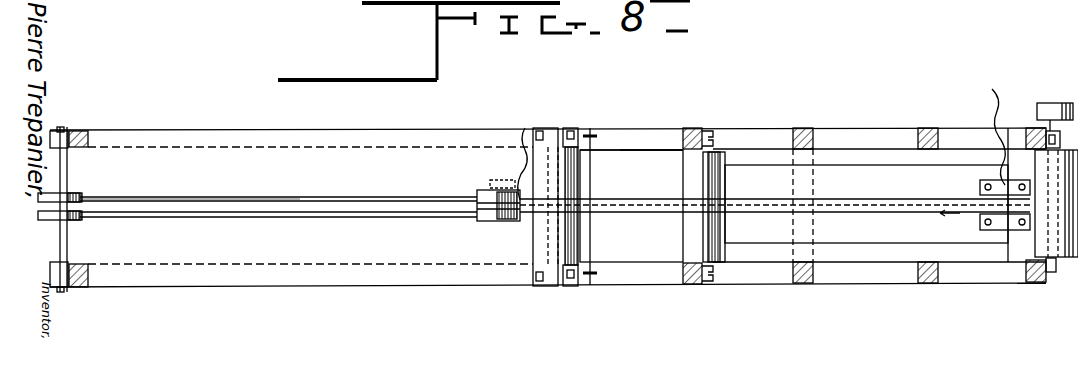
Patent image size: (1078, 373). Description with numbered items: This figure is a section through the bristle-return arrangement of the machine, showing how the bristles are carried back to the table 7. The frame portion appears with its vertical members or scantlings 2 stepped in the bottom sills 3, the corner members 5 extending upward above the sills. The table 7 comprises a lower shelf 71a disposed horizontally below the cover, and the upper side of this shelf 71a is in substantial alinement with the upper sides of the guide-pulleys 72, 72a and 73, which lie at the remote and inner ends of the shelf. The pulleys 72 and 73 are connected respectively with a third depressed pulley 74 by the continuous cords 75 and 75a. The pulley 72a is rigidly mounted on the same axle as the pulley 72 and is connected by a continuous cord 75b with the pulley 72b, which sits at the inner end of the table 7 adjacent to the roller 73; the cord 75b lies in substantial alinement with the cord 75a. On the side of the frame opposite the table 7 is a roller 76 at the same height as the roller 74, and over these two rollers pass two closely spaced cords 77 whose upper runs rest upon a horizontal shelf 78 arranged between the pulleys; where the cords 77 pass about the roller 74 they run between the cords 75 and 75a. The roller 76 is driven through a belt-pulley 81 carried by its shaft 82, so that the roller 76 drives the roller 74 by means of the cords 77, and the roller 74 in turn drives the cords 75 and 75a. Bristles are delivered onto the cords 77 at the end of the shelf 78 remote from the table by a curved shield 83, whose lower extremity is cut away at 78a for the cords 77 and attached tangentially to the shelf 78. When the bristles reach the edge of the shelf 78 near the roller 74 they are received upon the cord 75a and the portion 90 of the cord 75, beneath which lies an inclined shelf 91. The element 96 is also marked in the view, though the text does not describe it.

The vertical members or scantlings 2 is at (801, 128).
The bottom sills 3 is at (850, 106).
The corner members 5 is at (691, 128).
The table 7 is at (365, 129).
The lower shelf 71a is at (212, 275).
The guide-pulley 72 is at (80, 224).
The guide-pulley 72a is at (78, 198).
The pulley 72b is at (523, 128).
The guide-pulley or roller 73 is at (548, 240).
The depressed pulley or roller 74 is at (712, 236).
The continuous cord 75 is at (368, 219).
The continuous cord 75a is at (627, 204).
The continuous cord 75b is at (234, 179).
The roller or pulley 76 is at (1058, 257).
The cords 77 is at (903, 199).
The horizontal shelf 78 is at (866, 195).
The cut-away portion 78a is at (981, 122).
The belt-pulley 81 is at (1050, 108).
The shaft 82 is at (1048, 130).
The shield or guide 83 is at (1048, 224).
The portion of the cord 75 90 is at (657, 215).
The inclined shelf 91 is at (634, 150).
The element 96 is at (729, 13).